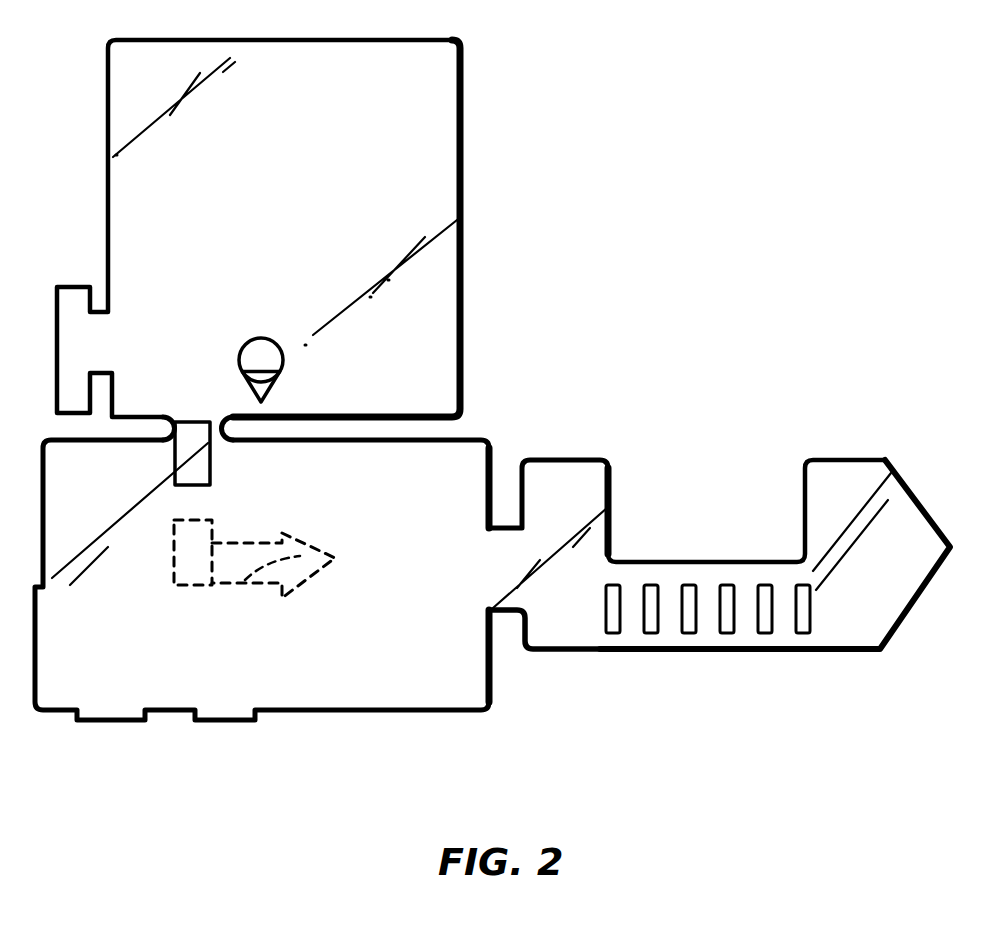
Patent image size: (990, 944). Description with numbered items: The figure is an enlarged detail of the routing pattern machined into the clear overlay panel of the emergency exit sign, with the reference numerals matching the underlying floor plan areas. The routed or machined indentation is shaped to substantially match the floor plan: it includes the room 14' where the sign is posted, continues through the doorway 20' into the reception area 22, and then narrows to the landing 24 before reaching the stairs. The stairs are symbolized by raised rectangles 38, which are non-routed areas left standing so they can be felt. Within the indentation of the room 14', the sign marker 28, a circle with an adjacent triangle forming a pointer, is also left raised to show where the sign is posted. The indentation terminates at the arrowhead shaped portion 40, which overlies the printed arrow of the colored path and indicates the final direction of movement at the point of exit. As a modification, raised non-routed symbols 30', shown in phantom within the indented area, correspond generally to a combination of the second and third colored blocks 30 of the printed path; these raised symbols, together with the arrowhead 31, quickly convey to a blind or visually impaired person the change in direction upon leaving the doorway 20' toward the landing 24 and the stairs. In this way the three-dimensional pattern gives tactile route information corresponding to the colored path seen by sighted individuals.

The room 14' is at (258, 240).
The doorway 20' is at (257, 452).
The reception area 22 is at (393, 648).
The landing 24 is at (580, 510).
The sign marker 28 is at (272, 342).
The raised symbols 30' is at (189, 428).
The colored block 30 is at (165, 553).
The arrowhead 31 is at (235, 593).
The raised rectangles 38 is at (613, 633).
The arrowhead shaped portion 40 is at (918, 518).